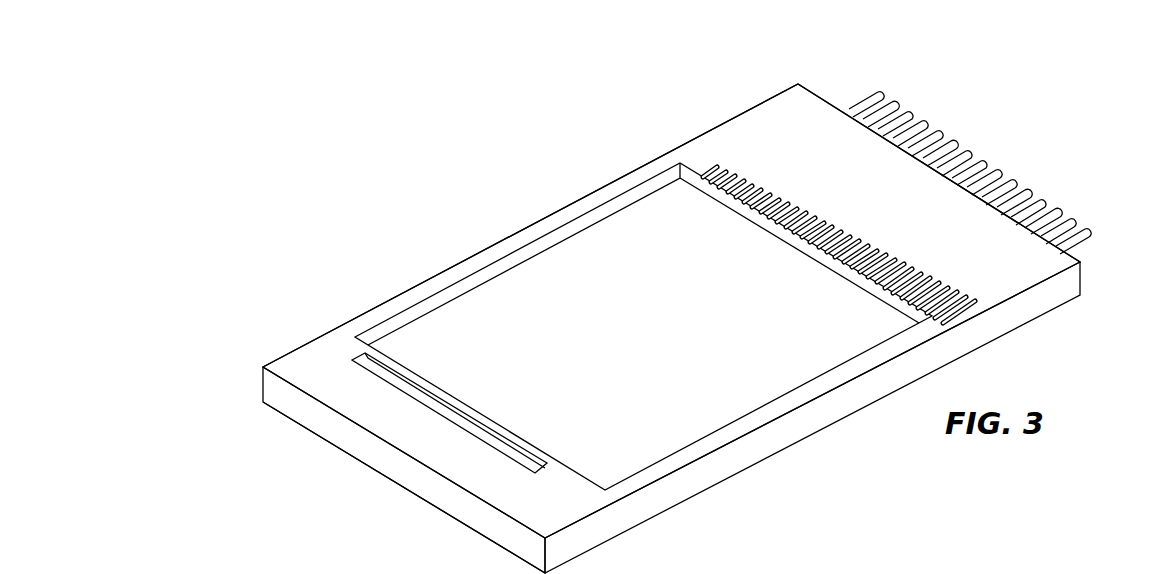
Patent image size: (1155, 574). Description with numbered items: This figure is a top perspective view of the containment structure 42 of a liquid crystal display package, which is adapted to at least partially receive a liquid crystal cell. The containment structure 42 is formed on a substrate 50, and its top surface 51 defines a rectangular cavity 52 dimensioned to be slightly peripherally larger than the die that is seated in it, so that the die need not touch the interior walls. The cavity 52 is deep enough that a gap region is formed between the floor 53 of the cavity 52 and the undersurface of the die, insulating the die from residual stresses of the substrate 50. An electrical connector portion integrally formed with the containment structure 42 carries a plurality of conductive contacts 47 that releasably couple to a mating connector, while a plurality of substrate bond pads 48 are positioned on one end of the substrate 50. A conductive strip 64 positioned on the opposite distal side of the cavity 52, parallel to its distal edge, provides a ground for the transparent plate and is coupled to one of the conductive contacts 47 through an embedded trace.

The containment structure 42 is at (500, 243).
The conductive contacts 47 is at (972, 147).
The substrate bond pads 48 is at (746, 166).
The substrate 50 is at (783, 433).
The top surface 51 is at (417, 442).
The cavity 52 is at (628, 331).
The floor 53 is at (637, 449).
The conductive strip 64 is at (382, 372).